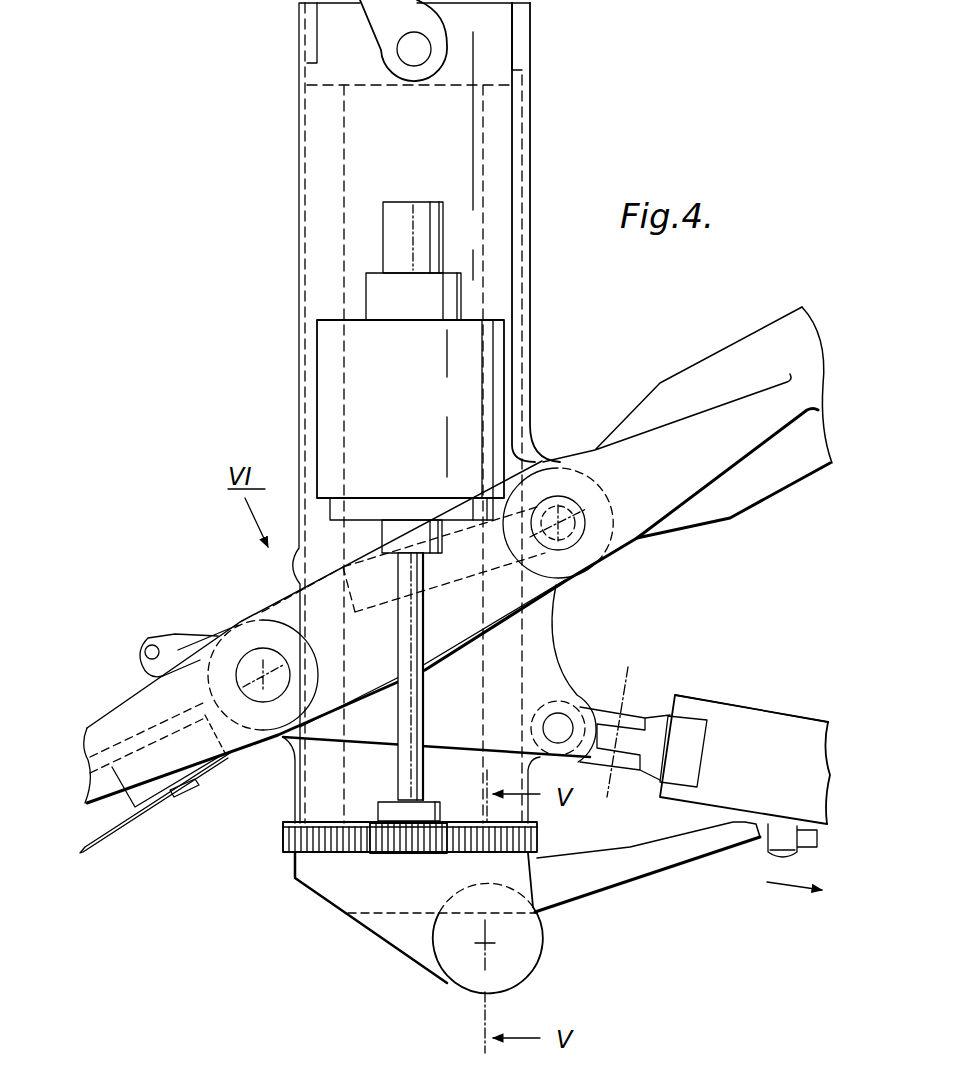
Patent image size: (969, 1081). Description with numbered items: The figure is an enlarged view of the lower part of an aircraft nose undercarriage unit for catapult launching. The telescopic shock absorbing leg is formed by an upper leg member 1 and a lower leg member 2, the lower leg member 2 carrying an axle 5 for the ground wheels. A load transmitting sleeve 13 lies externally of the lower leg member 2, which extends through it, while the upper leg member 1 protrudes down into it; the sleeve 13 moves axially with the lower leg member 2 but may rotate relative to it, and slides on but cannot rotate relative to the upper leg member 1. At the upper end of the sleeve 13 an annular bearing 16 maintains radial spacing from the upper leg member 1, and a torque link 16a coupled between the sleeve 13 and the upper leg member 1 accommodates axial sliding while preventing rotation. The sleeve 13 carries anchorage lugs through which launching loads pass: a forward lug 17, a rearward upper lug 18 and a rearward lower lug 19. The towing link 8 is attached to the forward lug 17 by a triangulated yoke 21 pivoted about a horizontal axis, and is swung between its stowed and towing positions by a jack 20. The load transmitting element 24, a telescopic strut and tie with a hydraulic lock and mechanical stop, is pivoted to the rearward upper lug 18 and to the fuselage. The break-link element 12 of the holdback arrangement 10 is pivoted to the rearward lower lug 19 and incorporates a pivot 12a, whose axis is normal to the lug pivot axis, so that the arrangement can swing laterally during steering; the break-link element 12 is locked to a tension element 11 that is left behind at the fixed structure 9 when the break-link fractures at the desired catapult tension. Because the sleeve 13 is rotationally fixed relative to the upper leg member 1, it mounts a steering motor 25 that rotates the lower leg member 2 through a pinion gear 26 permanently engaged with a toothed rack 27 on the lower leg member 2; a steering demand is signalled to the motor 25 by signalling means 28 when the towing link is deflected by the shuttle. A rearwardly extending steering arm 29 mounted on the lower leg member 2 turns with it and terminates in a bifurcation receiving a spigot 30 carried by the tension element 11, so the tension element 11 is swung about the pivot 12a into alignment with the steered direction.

The upper leg member 1 is at (348, 66).
The lower leg member 2 is at (320, 870).
The axle 5 is at (453, 957).
The towing link 8 is at (125, 700).
The fixed structure 9 is at (783, 890).
The holdback arrangement 10 is at (800, 707).
The tension element 11 is at (753, 732).
The break-link element 12 is at (688, 732).
The pivot 12a is at (702, 682).
The load transmitting sleeve 13 is at (532, 152).
The annular bearing 16 is at (495, 68).
The torque link 16a is at (380, 15).
The forward lug 17 is at (250, 650).
The rearward upper lug 18 is at (543, 460).
The rearward lower lug 19 is at (567, 700).
The jack 20 is at (343, 567).
The triangulated yoke 21 is at (110, 780).
The load transmitting element 24 is at (728, 353).
The steering motor 25 is at (472, 348).
The pinion gear 26 is at (398, 843).
The toothed rack 27 is at (282, 838).
The signalling means 28 is at (225, 760).
The steering arm 29 is at (667, 867).
The spigot 30 is at (772, 857).